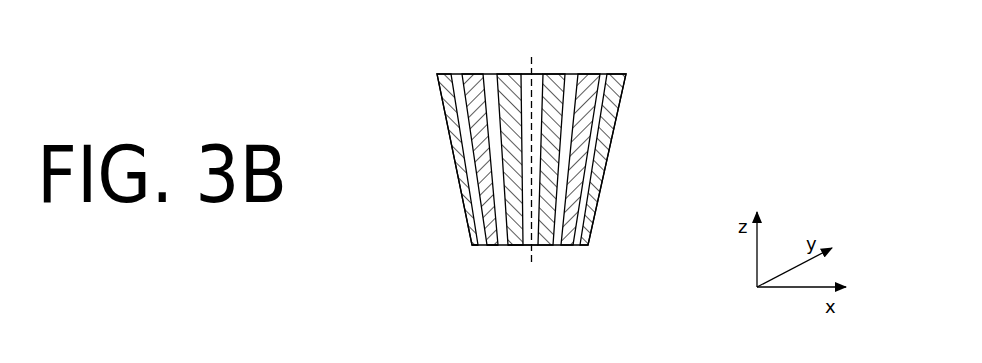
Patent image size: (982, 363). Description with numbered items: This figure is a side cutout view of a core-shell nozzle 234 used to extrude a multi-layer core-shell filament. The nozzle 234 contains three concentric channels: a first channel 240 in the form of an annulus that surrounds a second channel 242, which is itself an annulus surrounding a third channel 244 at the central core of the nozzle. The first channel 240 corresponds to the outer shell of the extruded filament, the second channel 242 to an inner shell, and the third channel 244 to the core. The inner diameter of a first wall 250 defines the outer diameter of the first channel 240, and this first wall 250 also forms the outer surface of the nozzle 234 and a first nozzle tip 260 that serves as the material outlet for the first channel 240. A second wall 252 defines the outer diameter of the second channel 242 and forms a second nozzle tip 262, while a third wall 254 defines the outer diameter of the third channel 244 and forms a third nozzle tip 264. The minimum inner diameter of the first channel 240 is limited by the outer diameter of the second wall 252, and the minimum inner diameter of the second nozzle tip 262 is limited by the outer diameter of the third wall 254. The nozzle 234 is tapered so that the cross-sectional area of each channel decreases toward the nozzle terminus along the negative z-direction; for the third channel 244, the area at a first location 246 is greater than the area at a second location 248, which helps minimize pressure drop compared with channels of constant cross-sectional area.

The core-shell nozzle 234 is at (640, 156).
The first channel 240 is at (607, 93).
The second channel 242 is at (562, 166).
The third channel 244 is at (537, 216).
The first location 246 is at (540, 78).
The second location 248 is at (535, 245).
The first wall 250 is at (462, 174).
The second wall 252 is at (482, 138).
The third wall 254 is at (511, 93).
The first nozzle tip 260 is at (474, 246).
The second nozzle tip 262 is at (498, 245).
The third nozzle tip 264 is at (518, 245).